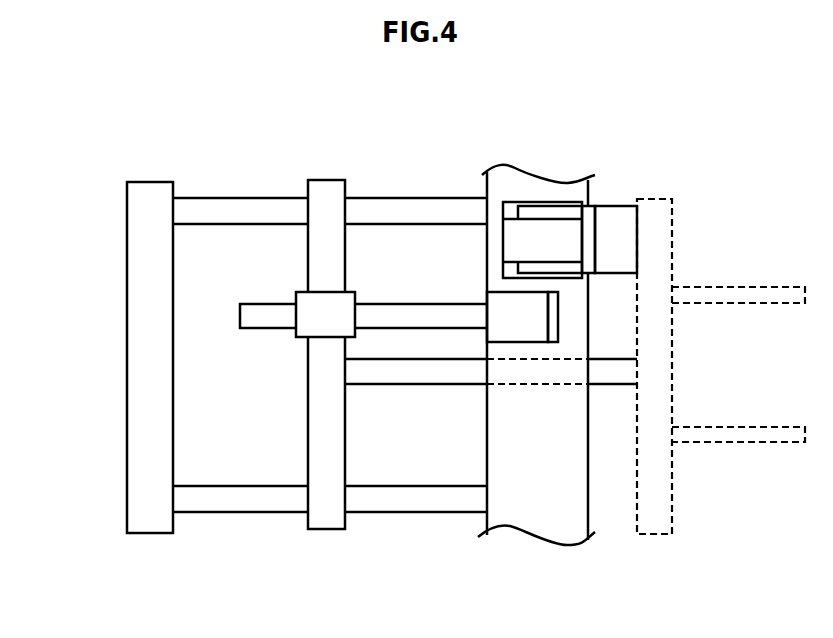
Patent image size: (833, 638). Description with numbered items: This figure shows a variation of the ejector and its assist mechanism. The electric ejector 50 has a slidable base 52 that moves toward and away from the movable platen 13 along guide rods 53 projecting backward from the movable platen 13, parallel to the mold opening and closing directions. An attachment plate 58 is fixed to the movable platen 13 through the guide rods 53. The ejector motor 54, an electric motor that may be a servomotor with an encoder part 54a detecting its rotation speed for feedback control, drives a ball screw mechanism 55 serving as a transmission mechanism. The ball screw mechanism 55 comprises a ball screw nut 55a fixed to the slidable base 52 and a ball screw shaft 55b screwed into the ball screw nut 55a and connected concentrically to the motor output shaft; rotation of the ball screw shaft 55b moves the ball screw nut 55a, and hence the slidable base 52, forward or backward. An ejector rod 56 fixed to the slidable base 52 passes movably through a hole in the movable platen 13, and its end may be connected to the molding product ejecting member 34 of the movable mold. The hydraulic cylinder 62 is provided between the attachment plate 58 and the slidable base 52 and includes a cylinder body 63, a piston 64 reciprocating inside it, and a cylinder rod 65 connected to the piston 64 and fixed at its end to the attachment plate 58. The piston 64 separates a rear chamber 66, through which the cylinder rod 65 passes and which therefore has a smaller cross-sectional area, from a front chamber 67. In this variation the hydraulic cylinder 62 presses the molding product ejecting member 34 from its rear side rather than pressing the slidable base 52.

The electric ejector 50 is at (146, 171).
The attachment plate 58 is at (138, 290).
The guide rods 53 is at (248, 196).
The slidable base 52 is at (326, 184).
The ball screw mechanism 55 is at (300, 265).
The ball screw nut 55a is at (320, 305).
The ball screw shaft 55b is at (255, 306).
The ejector rod 56 is at (399, 362).
The movable platen 13 is at (533, 178).
The ejector motor 54 is at (512, 345).
The encoder part 54a is at (552, 345).
The hydraulic cylinder 62 is at (492, 262).
The cylinder body 63 is at (516, 208).
The cylinder rod 65 is at (512, 243).
The rear chamber 66 is at (553, 208).
The piston 64 is at (590, 207).
The front chamber 67 is at (607, 276).
The molding product ejecting member 34 is at (652, 200).